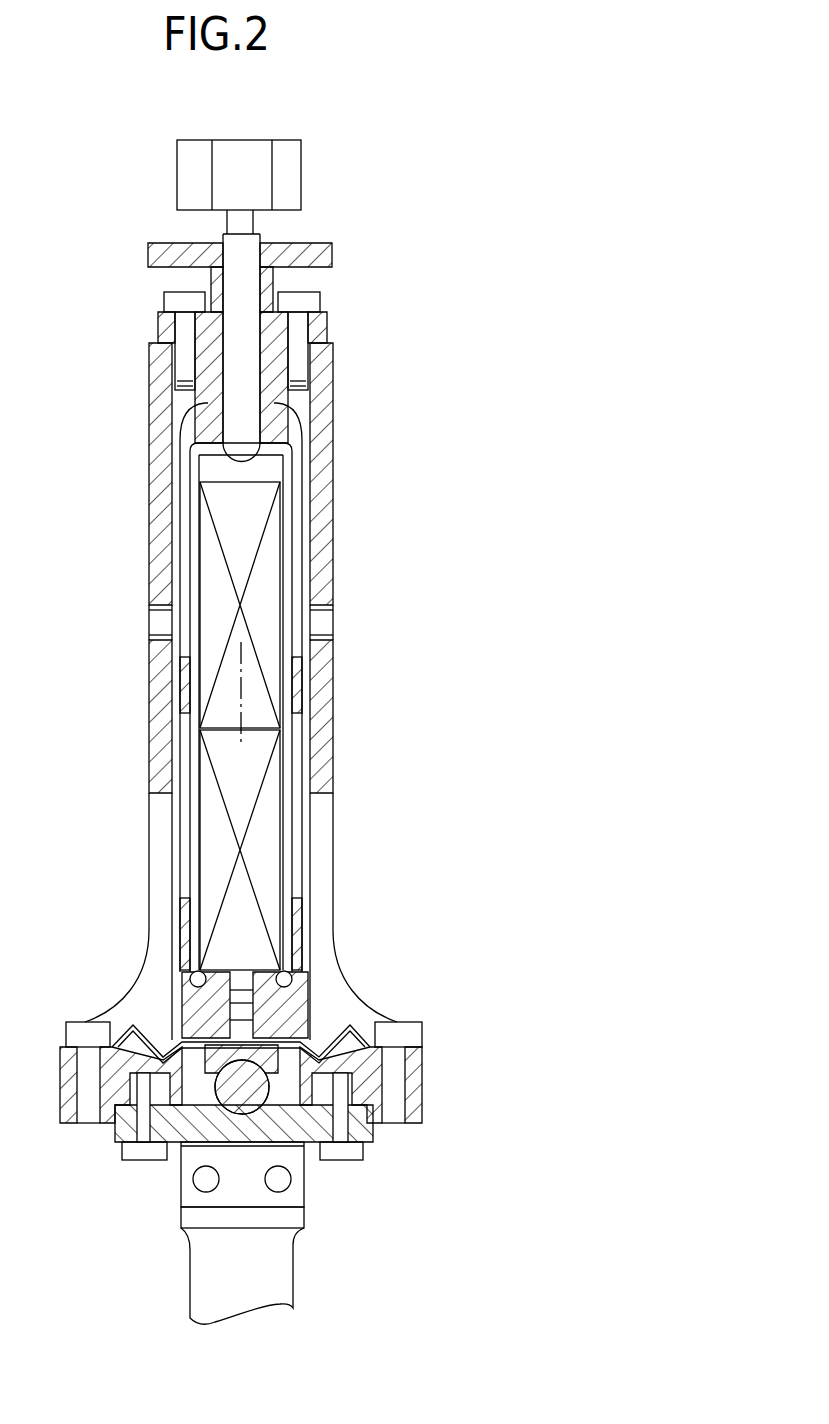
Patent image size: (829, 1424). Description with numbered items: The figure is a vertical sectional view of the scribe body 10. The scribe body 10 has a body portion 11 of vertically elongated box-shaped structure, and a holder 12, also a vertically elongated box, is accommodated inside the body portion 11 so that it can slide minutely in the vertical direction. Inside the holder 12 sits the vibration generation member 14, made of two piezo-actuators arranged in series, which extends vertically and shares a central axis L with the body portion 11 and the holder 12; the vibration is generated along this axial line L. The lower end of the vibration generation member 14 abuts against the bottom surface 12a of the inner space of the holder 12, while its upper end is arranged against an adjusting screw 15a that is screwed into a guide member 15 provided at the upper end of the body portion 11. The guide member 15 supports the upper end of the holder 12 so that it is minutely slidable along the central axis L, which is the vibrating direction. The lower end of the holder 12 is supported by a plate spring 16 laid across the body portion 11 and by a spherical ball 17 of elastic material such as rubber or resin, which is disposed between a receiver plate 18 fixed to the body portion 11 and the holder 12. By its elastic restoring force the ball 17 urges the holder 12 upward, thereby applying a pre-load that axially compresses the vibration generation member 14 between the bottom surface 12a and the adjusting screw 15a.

The scribe body 10 is at (353, 628).
The body portion 11 is at (328, 550).
The holder 12 is at (297, 461).
The bottom surface 12a is at (247, 967).
The vibration generation member 14 is at (220, 590).
The guide member 15 is at (292, 423).
The adjusting screw 15a is at (247, 286).
The plate spring 16 is at (352, 1009).
The ball 17 is at (242, 1112).
The receiver plate 18 is at (283, 1130).
The central axis L is at (240, 755).